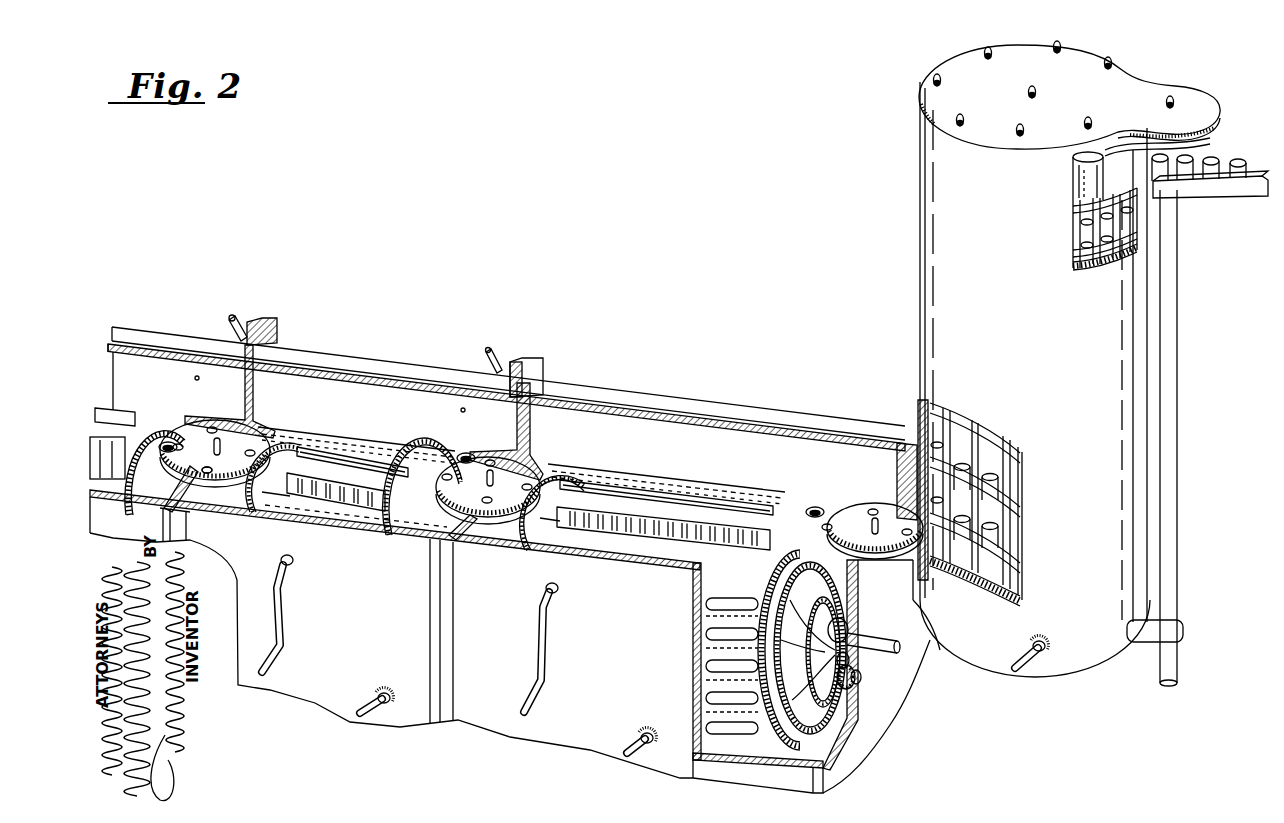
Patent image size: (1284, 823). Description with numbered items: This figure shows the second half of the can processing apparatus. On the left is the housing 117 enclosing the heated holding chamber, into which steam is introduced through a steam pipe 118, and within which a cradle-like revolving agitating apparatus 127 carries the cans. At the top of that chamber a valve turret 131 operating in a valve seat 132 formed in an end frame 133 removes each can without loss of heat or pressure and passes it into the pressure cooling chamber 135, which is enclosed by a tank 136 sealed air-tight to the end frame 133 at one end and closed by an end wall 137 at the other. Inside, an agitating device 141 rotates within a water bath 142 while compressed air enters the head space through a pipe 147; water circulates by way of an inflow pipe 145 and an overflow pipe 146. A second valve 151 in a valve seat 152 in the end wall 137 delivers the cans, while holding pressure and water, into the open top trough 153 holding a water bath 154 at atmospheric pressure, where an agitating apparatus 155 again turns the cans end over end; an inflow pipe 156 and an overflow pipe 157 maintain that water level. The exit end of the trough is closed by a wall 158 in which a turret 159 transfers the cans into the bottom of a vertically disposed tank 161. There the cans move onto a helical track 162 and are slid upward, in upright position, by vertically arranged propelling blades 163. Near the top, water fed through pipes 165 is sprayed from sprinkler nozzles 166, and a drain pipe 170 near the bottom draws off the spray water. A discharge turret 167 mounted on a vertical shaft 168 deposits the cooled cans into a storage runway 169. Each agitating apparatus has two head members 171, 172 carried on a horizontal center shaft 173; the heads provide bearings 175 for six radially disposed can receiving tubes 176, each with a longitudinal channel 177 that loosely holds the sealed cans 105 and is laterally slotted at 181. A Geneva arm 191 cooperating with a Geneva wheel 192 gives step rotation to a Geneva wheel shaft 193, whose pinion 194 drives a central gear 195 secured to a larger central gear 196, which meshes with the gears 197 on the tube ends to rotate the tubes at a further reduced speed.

The sealed cans 105 is at (370, 507).
The housing 117 is at (165, 336).
The steam pipe 118 is at (245, 318).
The agitating apparatus 127 is at (103, 420).
The valve turret 131 is at (204, 436).
The valve seat 132 is at (224, 502).
The end frame 133 is at (258, 395).
The pressure cooling chamber 135 is at (366, 438).
The tank 136 is at (332, 358).
The end wall 137 is at (542, 376).
The agitating device 141 is at (410, 462).
The water bath 142 is at (376, 450).
The inflow pipe 145 is at (368, 708).
The overflow pipe 146 is at (285, 606).
The pipe 147 is at (489, 352).
The valve 151 is at (548, 470).
The valve seat 152 is at (526, 463).
The open top trough 153 is at (620, 414).
The water bath 154 is at (630, 466).
The agitating apparatus 155 is at (650, 500).
The inflow pipe 156 is at (625, 748).
The overflow pipe 157 is at (545, 645).
The wall 158 is at (887, 713).
The turret 159 is at (850, 510).
The vertically disposed tank 161 is at (932, 258).
The helical track 162 is at (1095, 270).
The propelling blades 163 is at (985, 435).
The pipes 165 is at (1100, 60).
The sprinkler nozzles 166 is at (1085, 156).
The discharge turret 167 is at (1190, 150).
The vertical shaft 168 is at (1178, 288).
The storage runway 169 is at (1262, 200).
The drain pipe 170 is at (1030, 668).
The head member 171 is at (296, 452).
The head member 172 is at (157, 432).
The horizontal center shaft 173 is at (884, 646).
The end supports or bearings 175 is at (275, 494).
The can receiving tubes 176 is at (393, 500).
The longitudinal channel 177 is at (467, 603).
The lateral slots 181 is at (330, 512).
The Geneva arm 191 is at (860, 620).
The Geneva wheel 192 is at (862, 690).
The Geneva wheel shaft 193 is at (865, 678).
The pinion 194 is at (848, 655).
The central gear 195 is at (850, 610).
The larger central gear 196 is at (846, 580).
The gears 197 is at (168, 442).